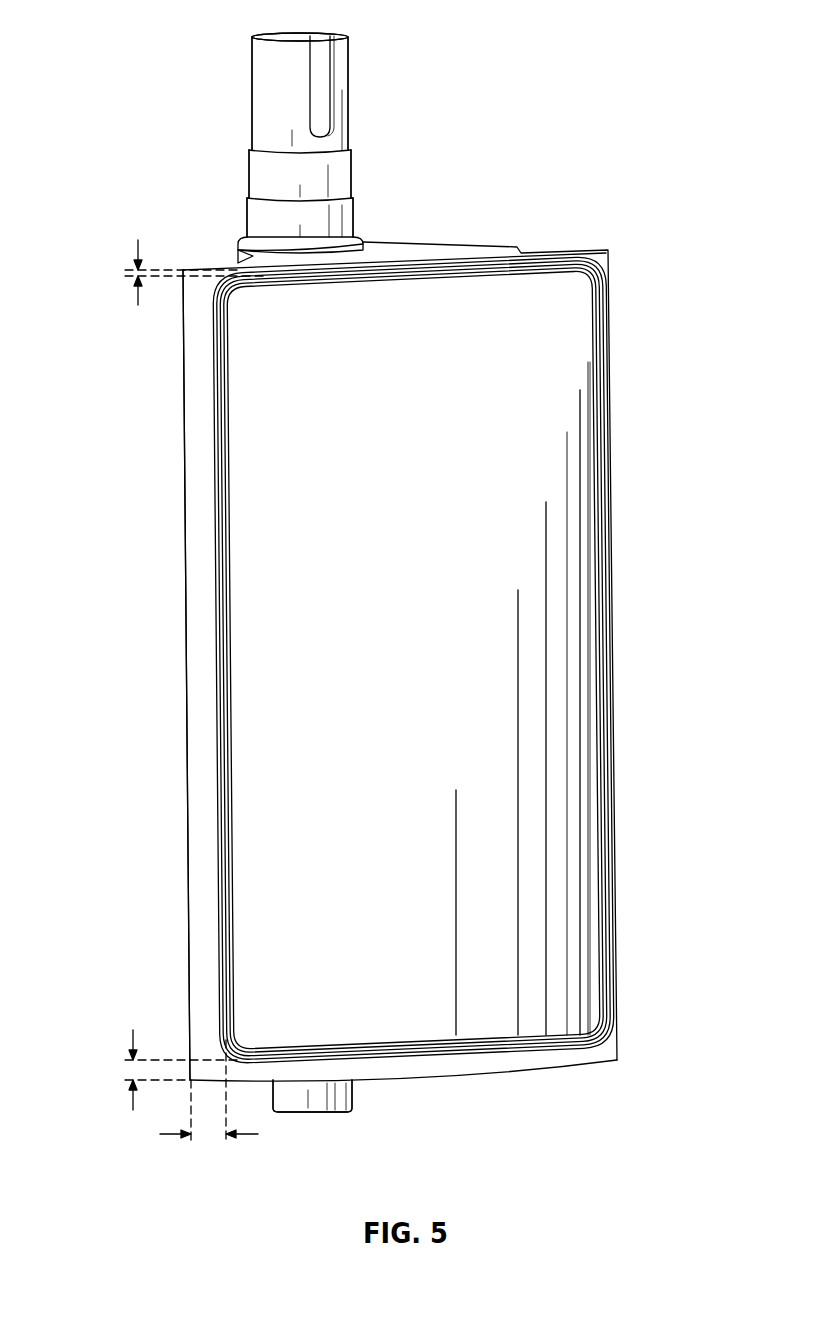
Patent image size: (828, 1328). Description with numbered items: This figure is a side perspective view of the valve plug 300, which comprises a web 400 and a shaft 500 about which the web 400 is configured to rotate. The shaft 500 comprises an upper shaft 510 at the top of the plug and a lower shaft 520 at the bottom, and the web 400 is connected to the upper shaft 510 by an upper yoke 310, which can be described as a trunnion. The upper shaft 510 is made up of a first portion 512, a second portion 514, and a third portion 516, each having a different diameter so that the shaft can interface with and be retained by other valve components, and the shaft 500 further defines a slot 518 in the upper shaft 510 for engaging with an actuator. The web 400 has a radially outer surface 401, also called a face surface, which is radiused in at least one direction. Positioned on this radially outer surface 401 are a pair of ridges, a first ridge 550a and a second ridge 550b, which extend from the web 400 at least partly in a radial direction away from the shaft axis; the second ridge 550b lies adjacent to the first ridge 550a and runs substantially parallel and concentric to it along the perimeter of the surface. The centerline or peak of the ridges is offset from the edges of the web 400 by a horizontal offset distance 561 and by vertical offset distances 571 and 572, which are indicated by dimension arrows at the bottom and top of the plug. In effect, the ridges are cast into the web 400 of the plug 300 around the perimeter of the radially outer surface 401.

The valve plug 300 is at (524, 58).
The upper yoke 310 is at (402, 255).
The web 400 is at (487, 450).
The radially outer surface 401 is at (532, 633).
The shaft 500 is at (263, 108).
The upper shaft 510 is at (300, 93).
The first portion 512 is at (280, 54).
The second portion 514 is at (323, 162).
The third portion 516 is at (333, 222).
The slot 518 is at (317, 62).
The lower shaft 520 is at (312, 1096).
The first ridge 550a is at (220, 787).
The second ridge 550b is at (233, 712).
The horizontal offset distance 561 is at (172, 1137).
The vertical offset distance 571 is at (133, 1042).
The vertical offset distance 572 is at (138, 290).